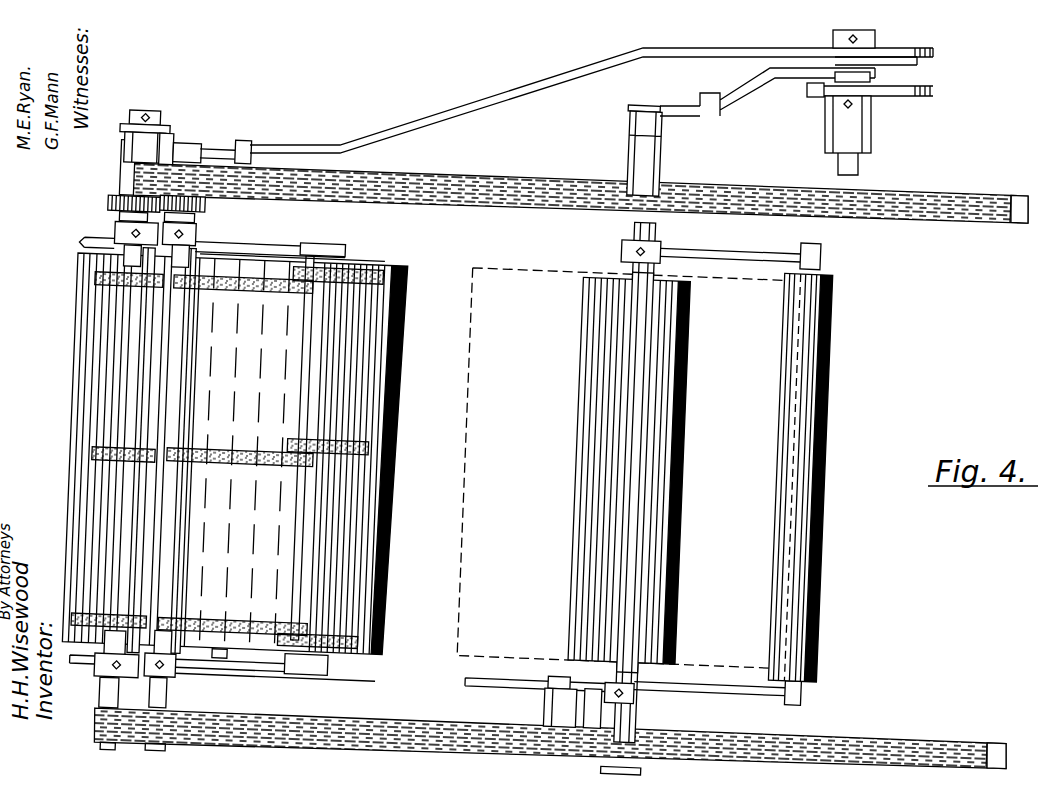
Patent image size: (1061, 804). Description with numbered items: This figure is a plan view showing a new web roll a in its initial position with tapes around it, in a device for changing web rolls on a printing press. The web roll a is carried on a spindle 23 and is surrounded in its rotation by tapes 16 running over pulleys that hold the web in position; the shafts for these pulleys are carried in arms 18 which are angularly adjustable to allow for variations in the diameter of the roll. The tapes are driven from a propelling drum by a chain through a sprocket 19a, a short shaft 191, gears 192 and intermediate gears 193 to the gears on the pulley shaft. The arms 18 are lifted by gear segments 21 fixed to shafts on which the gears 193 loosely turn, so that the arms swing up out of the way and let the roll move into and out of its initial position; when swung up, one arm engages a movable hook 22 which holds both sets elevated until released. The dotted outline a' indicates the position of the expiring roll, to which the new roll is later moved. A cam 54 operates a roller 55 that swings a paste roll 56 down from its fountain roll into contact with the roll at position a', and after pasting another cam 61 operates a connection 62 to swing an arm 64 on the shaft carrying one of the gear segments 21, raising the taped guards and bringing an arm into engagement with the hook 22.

The short shaft 191 is at (146, 110).
The sprocket 19a is at (168, 135).
The gear segment 21 is at (183, 143).
The arm 64 is at (240, 143).
The gear 192 is at (133, 180).
The intermediate gear 193 is at (108, 203).
The arm 18 is at (85, 242).
The tape 16 is at (118, 285).
The web roll a is at (215, 454).
The web roll position a' is at (584, 472).
The paste roll 56 is at (826, 368).
The connection 62 is at (712, 47).
The cam 61 is at (935, 50).
The roller 55 is at (812, 97).
The cam 54 is at (928, 98).
The movable hook 22 is at (480, 688).
The spindle 23 is at (226, 660).